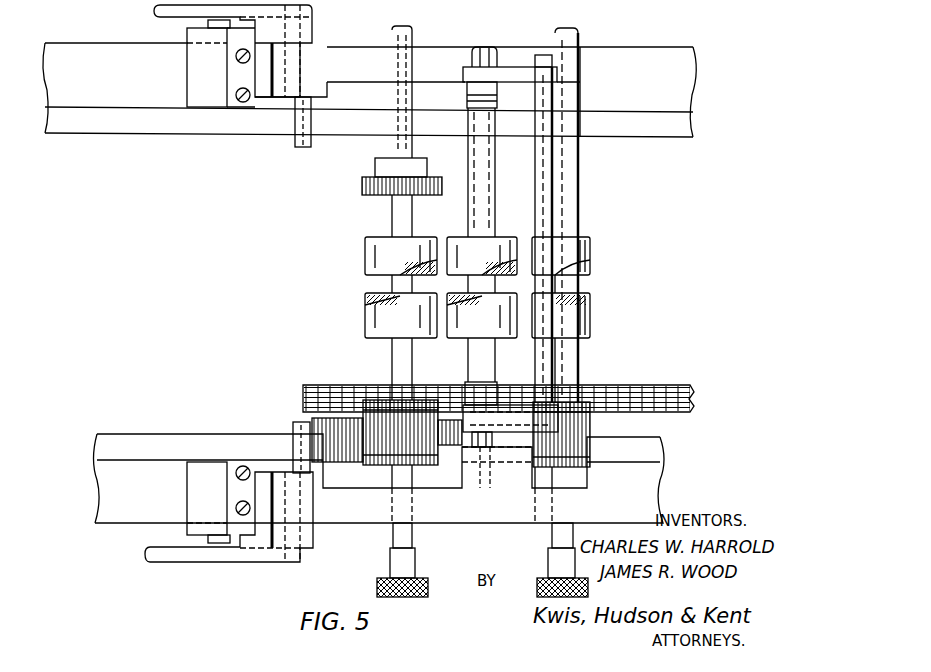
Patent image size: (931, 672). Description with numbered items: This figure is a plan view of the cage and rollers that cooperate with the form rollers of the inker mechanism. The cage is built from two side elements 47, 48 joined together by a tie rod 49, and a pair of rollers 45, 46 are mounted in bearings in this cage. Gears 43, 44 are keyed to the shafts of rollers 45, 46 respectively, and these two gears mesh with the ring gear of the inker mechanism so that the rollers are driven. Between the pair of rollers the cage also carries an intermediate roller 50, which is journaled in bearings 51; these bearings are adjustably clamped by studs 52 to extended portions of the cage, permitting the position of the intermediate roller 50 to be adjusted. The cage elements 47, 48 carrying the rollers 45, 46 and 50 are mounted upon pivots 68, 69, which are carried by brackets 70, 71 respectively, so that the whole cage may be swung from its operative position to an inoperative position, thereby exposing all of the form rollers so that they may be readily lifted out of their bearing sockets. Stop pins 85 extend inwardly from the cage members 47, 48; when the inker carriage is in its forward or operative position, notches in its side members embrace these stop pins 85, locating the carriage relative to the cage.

The gear 43 is at (418, 465).
The gear 44 is at (590, 462).
The roller 45 is at (367, 322).
The roller 46 is at (590, 323).
The side element 47 is at (356, 518).
The side element 48 is at (366, 53).
The tie rod 49 is at (541, 189).
The intermediate roller 50 is at (500, 238).
The bearing 51 is at (500, 100).
The stud 52 is at (486, 47).
The pivot 68 is at (290, 455).
The pivot 69 is at (282, 107).
The bracket 70 is at (233, 494).
The bracket 71 is at (236, 78).
The stop pin 85 is at (304, 147).